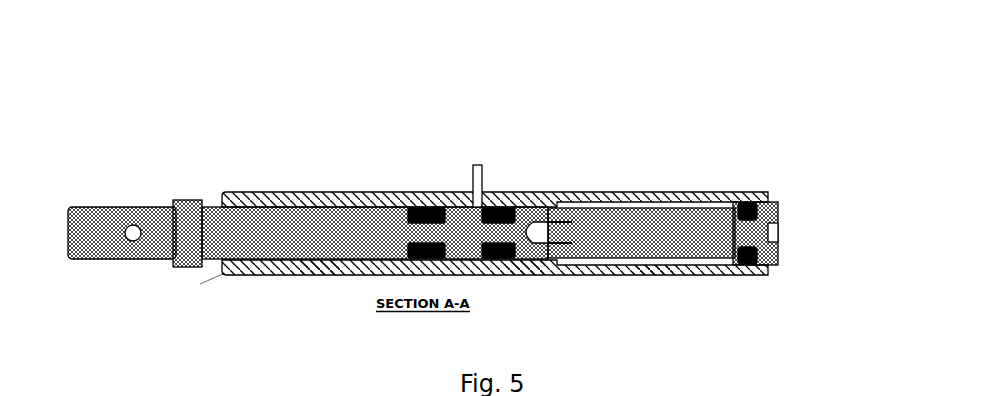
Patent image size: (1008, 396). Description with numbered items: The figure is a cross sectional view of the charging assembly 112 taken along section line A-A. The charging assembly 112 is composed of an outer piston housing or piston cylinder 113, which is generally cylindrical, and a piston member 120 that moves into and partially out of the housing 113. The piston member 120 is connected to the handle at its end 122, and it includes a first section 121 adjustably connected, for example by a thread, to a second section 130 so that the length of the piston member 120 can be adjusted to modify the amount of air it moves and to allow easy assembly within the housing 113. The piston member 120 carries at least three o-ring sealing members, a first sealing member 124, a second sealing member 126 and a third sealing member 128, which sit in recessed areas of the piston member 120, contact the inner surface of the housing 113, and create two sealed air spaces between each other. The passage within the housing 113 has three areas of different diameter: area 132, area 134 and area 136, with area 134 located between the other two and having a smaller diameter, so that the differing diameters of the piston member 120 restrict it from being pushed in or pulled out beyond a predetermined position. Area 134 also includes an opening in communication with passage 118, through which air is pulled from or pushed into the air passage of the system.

The charging assembly 112 is at (448, 199).
The piston cylinder 113 is at (291, 190).
The passage 118 is at (474, 167).
The piston member 120 is at (172, 292).
The first section 121 is at (218, 220).
The end 122 is at (109, 220).
The first sealing member 124 is at (435, 208).
The second sealing member 126 is at (500, 208).
The third sealing member 128 is at (763, 203).
The second section 130 is at (642, 218).
The area 132 is at (318, 270).
The area 134 is at (525, 270).
The area 136 is at (653, 273).